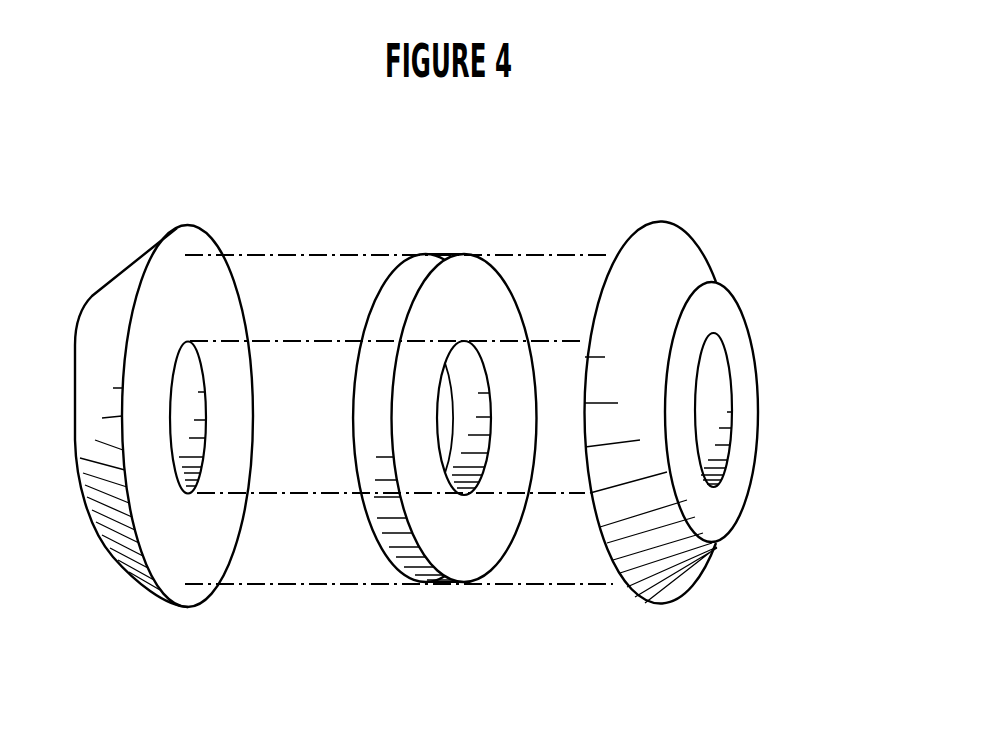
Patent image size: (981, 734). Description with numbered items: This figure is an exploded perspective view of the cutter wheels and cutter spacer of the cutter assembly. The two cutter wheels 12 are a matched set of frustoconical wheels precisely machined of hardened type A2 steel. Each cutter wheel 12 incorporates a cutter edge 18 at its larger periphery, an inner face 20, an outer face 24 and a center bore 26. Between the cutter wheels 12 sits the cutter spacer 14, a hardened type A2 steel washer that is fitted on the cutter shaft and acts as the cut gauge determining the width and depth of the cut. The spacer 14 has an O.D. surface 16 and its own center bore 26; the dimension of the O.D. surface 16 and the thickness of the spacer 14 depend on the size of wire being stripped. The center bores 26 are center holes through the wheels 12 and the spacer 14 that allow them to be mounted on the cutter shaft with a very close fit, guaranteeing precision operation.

The cutter wheel 12 is at (424, 362).
The cutter spacer 14 is at (458, 525).
The O.D. surface 16 is at (414, 273).
The cutter edge 18 is at (181, 226).
The inner face 20 is at (191, 243).
The outer face 24 is at (713, 312).
The center bore 26 is at (197, 495).